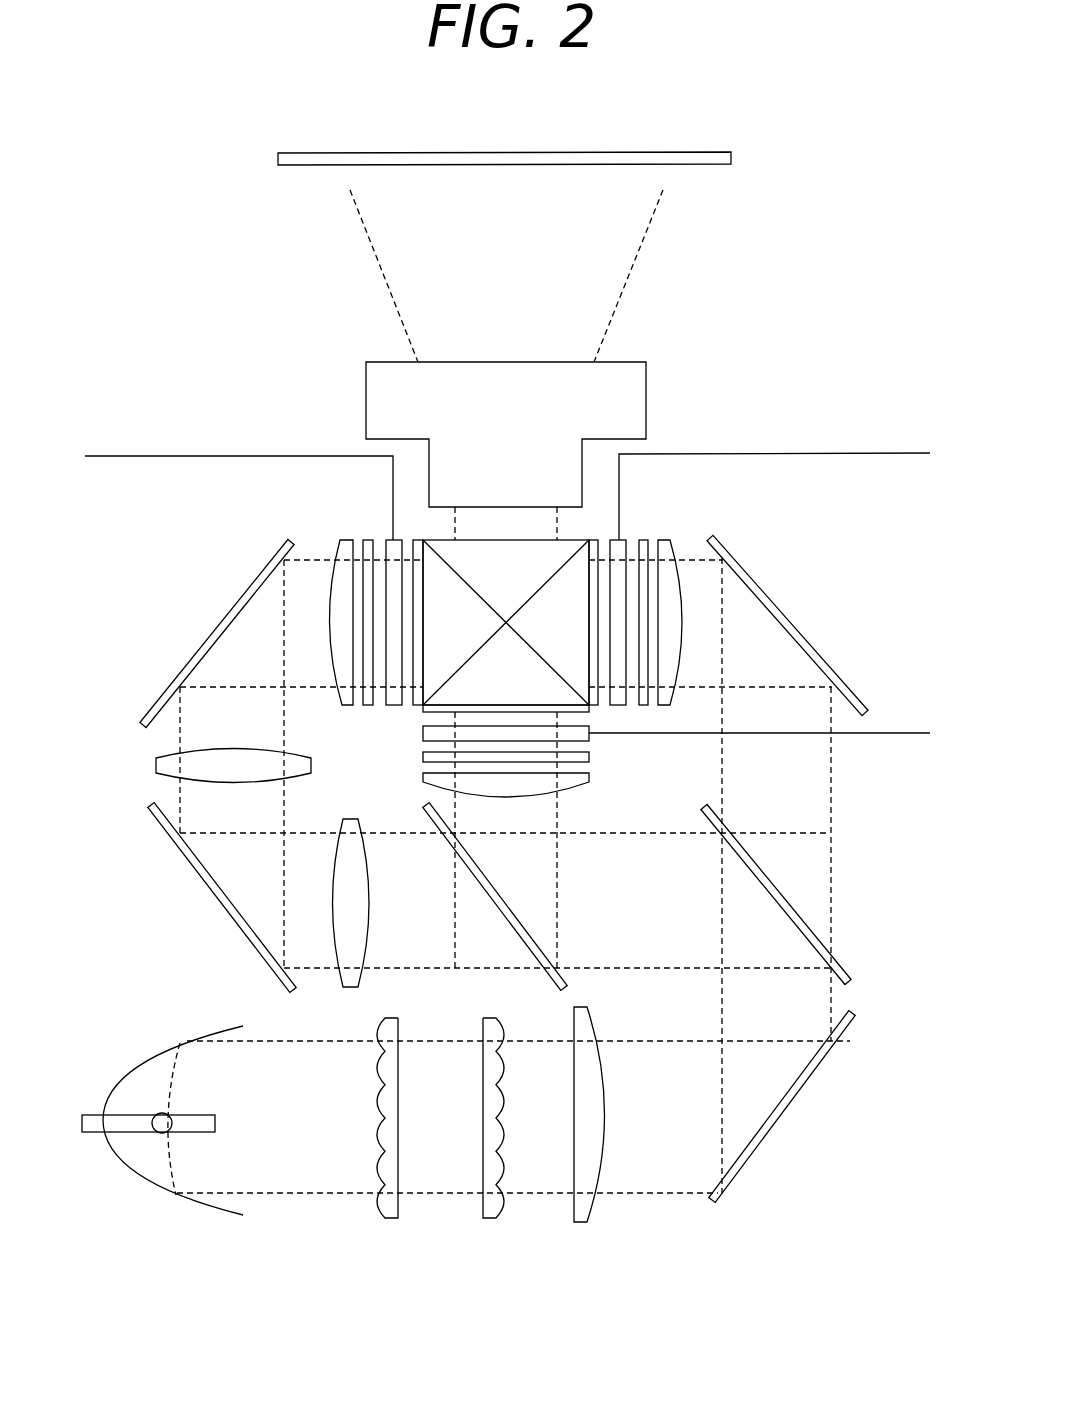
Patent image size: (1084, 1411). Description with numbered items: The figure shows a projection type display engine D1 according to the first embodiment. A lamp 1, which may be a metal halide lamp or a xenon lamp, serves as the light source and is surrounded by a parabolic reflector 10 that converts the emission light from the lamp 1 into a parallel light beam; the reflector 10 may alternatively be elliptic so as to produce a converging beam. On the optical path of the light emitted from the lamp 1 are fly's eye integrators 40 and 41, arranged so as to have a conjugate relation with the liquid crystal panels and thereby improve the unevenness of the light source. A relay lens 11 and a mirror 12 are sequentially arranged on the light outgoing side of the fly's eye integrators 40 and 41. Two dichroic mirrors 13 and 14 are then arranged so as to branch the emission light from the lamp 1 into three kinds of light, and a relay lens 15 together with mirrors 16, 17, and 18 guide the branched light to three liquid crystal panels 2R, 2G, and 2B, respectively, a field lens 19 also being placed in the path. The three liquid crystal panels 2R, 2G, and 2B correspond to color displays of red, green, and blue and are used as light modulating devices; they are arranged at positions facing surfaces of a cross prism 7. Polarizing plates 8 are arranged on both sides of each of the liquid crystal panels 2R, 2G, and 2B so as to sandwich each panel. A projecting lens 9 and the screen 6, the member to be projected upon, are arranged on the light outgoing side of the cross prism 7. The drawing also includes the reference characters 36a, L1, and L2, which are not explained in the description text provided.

The screen 6 is at (710, 156).
The cross prism 7 is at (504, 550).
The projecting lens 9 is at (640, 377).
The partition wall 36a is at (120, 454).
The field lens 19 is at (343, 540).
The polarizing plate 8 is at (367, 540).
The liquid crystal panel 2R is at (392, 540).
The liquid crystal panel 2G is at (423, 735).
The liquid crystal panel 2B is at (618, 540).
The mirror 18 is at (225, 618).
The mirror 16 is at (785, 620).
The relay lens 15 is at (160, 766).
The mirror 17 is at (215, 898).
The dichroic mirror 14 is at (495, 893).
The dichroic mirror 13 is at (775, 890).
The mirror 12 is at (752, 1150).
The lamp 1 is at (160, 1127).
The parabolic reflector 10 is at (223, 1212).
The light emission region L1 is at (172, 1172).
The illumination light beam L2 is at (312, 1197).
The fly's eye integrator 40 is at (390, 1215).
The fly's eye integrator 41 is at (487, 1215).
The relay lens 11 is at (580, 1218).
The projection type display engine D1 is at (784, 288).